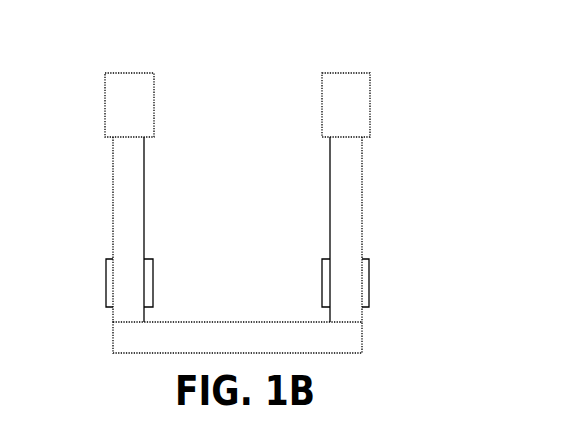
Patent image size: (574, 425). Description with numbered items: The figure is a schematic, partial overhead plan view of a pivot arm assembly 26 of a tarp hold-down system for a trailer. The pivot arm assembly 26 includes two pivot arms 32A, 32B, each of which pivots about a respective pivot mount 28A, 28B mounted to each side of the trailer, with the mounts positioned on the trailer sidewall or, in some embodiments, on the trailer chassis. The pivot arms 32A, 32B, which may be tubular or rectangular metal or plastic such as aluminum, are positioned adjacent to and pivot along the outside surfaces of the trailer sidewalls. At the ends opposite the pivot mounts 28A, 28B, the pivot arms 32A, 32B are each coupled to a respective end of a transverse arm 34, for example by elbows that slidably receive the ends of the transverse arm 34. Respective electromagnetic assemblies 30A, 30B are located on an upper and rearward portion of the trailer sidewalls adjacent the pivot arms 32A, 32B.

The pivot arm assembly 26 is at (416, 59).
The pivot mount 28A is at (107, 108).
The pivot mount 28B is at (323, 108).
The pivot arm 32A is at (113, 195).
The pivot arm 32B is at (330, 195).
The electromagnetic assembly 30A is at (106, 278).
The electromagnetic assembly 30B is at (325, 277).
The transverse arm 34 is at (253, 322).